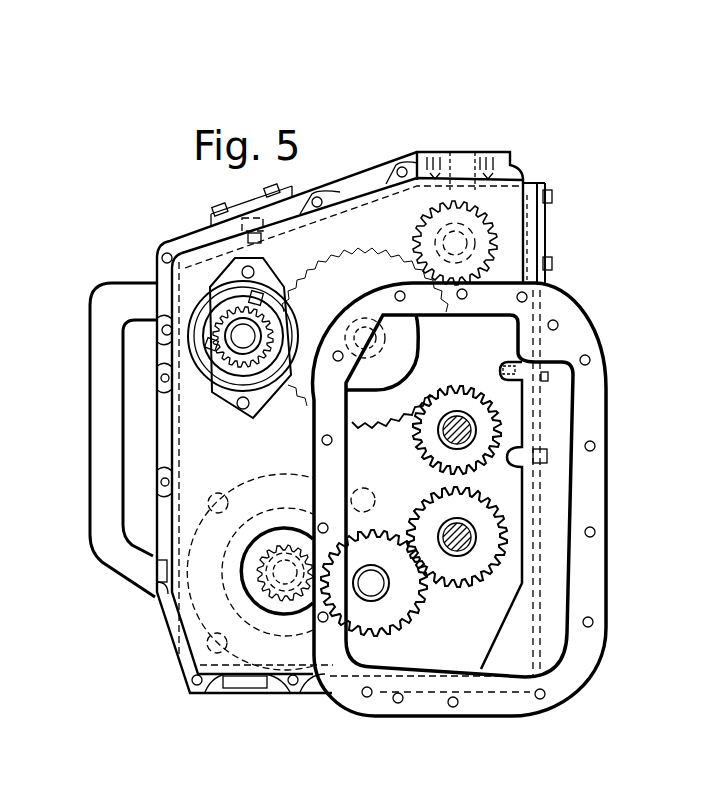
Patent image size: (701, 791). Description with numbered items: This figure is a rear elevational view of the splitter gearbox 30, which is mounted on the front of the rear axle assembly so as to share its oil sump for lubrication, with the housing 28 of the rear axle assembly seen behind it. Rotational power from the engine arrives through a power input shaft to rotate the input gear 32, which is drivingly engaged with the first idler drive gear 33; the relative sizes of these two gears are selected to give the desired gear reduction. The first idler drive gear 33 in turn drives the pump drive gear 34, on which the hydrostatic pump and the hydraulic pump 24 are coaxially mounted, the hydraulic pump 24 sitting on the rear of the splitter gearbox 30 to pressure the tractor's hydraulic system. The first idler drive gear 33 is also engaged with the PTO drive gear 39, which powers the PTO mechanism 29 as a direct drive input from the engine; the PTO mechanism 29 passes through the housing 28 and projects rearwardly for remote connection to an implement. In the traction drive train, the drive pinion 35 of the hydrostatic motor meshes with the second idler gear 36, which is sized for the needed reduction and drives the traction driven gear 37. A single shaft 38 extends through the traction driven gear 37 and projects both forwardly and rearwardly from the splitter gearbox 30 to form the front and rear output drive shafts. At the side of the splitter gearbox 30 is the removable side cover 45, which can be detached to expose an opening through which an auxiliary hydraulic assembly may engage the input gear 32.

The hydraulic pump 24 is at (222, 305).
The housing 28 is at (606, 472).
The power takeoff (PTO) mechanism 29 is at (474, 426).
The splitter gearbox 30 is at (568, 85).
The input gear 32 is at (487, 212).
The first idler drive gear 33 is at (360, 247).
The pump drive gear 34 is at (224, 317).
The drive pinion 35 is at (265, 594).
The second idler gear 36 is at (415, 600).
The traction driven gear 37 is at (487, 573).
The single shaft 38 is at (475, 535).
The PTO drive gear 39 is at (497, 408).
The removable side cover 45 is at (545, 218).